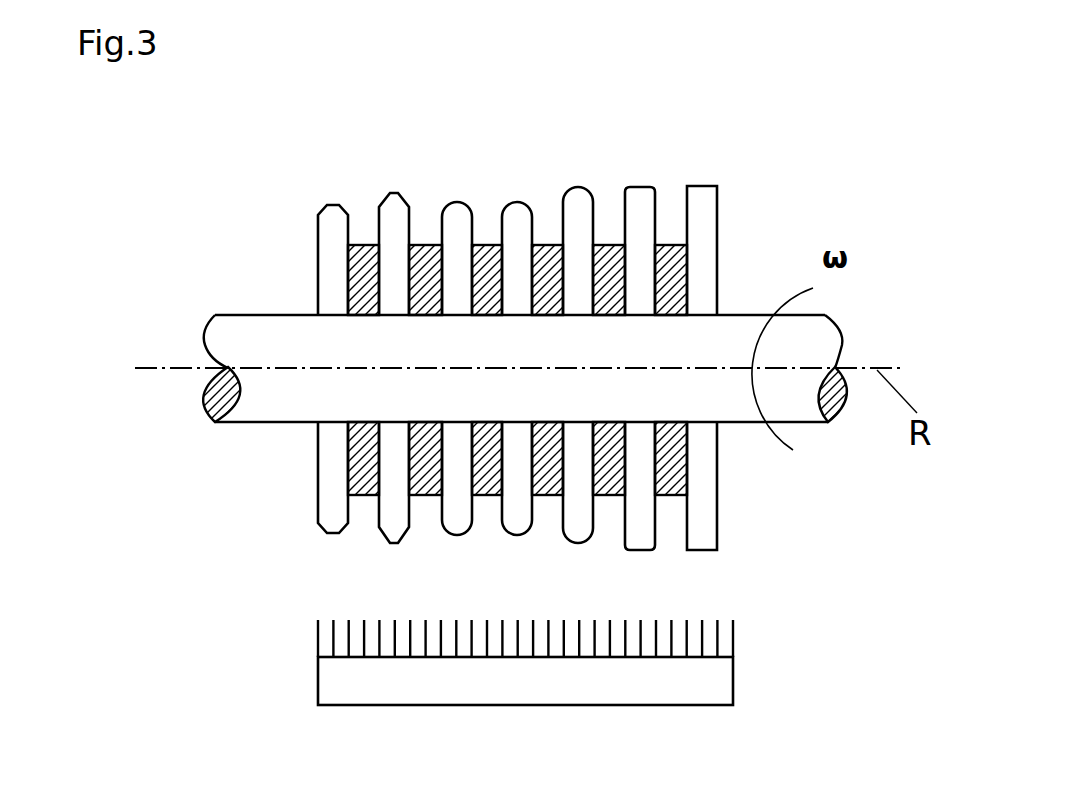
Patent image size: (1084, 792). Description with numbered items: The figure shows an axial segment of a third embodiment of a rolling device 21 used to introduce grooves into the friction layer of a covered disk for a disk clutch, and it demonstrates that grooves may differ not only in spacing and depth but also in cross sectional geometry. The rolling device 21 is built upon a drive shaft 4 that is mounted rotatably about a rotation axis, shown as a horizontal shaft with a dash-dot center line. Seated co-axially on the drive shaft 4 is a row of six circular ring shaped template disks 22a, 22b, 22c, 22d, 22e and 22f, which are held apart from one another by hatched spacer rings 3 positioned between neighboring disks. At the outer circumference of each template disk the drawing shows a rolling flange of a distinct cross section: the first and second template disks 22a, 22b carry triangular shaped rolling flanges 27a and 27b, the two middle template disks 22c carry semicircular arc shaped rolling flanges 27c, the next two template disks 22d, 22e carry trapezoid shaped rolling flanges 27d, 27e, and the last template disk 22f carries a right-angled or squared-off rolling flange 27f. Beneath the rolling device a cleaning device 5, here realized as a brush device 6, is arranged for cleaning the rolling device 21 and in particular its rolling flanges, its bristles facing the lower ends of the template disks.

The rolling device 21 is at (862, 102).
The spacer rings 3 is at (687, 273).
The drive shaft 4 is at (257, 403).
The cleaning device 5 is at (710, 680).
The brush device 6 is at (677, 637).
The triangular shaped rolling flange 27a is at (330, 213).
The triangular shaped rolling flange 27b is at (392, 213).
The semicircular arc shaped rolling flange 27c is at (517, 213).
The trapezoid shaped rolling flange 27d is at (580, 205).
The trapezoid shaped rolling flange 27e is at (633, 203).
The right-angled rolling flange 27f is at (705, 195).
The template disk 22a is at (333, 283).
The template disk 22b is at (403, 523).
The template disk 22c is at (512, 523).
The template disk 22d is at (582, 525).
The template disk 22e is at (642, 530).
The template disk 22f is at (702, 535).